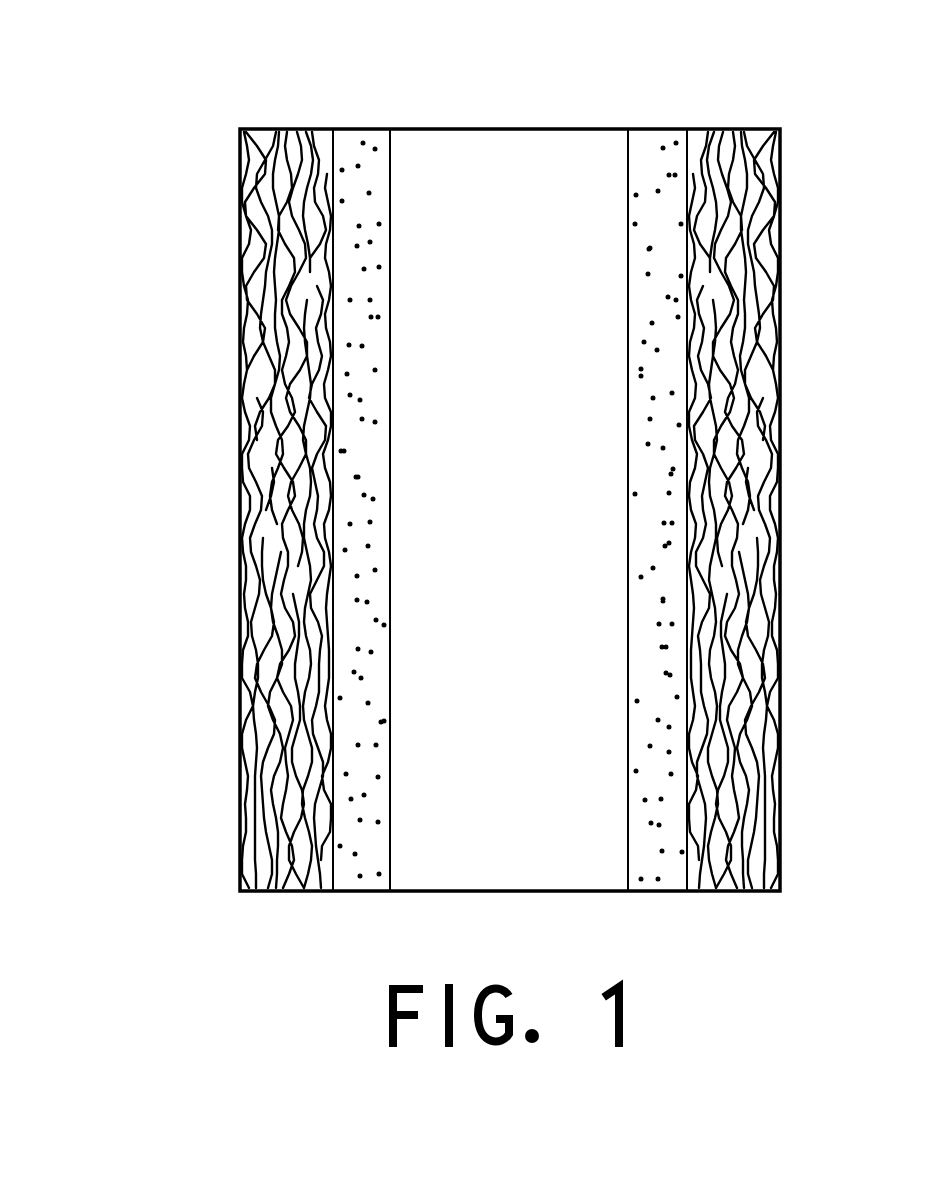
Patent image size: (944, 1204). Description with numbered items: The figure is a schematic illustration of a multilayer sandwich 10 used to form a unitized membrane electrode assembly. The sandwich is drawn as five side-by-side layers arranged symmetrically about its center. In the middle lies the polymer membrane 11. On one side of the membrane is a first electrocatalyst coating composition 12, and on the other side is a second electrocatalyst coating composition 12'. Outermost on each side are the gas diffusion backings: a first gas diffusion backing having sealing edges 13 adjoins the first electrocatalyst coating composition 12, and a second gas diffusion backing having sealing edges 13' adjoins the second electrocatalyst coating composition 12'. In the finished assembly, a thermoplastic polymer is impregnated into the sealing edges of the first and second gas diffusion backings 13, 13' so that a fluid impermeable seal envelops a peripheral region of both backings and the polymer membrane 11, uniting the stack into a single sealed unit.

The multilayer sandwich 10 is at (160, 482).
The polymer membrane 11 is at (515, 129).
The first electrocatalyst coating composition 12 is at (342, 468).
The second electrocatalyst coating composition 12' is at (689, 466).
The first gas diffusion backing having sealing edges 13 is at (248, 468).
The second gas diffusion backing having sealing edges 13' is at (773, 470).